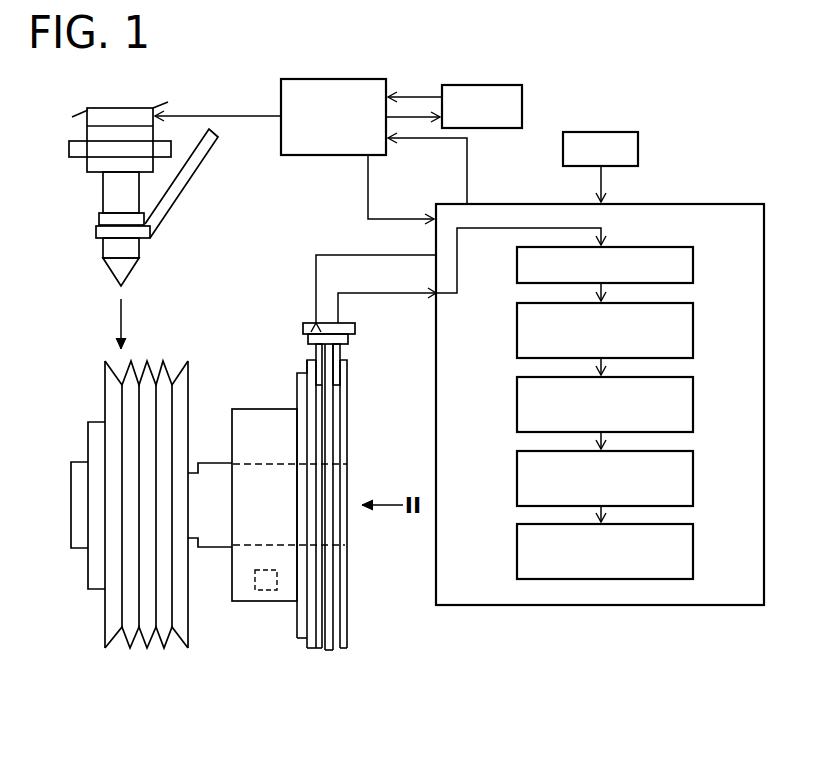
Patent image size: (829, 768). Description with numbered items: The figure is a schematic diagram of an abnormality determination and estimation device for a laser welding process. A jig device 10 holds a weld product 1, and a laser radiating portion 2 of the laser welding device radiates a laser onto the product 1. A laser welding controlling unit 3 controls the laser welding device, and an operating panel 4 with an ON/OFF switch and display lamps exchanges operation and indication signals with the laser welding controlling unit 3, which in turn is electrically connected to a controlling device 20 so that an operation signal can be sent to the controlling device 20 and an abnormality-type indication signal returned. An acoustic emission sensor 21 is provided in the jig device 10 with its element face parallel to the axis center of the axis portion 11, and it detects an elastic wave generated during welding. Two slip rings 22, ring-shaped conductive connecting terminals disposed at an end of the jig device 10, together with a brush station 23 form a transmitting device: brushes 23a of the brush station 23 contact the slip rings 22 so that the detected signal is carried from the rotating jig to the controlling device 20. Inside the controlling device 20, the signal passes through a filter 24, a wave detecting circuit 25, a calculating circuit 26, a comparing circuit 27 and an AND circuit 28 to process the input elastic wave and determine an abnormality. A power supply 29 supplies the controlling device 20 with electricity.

The weld product 1 is at (113, 619).
The laser radiating portion 2 is at (111, 197).
The laser welding controlling unit 3 is at (370, 78).
The operating panel 4 is at (481, 84).
The jig device 10 is at (245, 606).
The axis portion 11 is at (216, 534).
The controlling device 20 is at (737, 203).
The acoustic emission (AE) sensor 21 is at (265, 590).
The slip ring 22 is at (318, 650).
The brush station 23 is at (302, 318).
The brush 23a is at (313, 351).
The filter 24 is at (695, 265).
The wave detecting circuit 25 is at (695, 320).
The calculating circuit 26 is at (695, 393).
The comparing circuit 27 is at (695, 466).
The AND circuit 28 is at (695, 540).
The power supply 29 is at (640, 150).